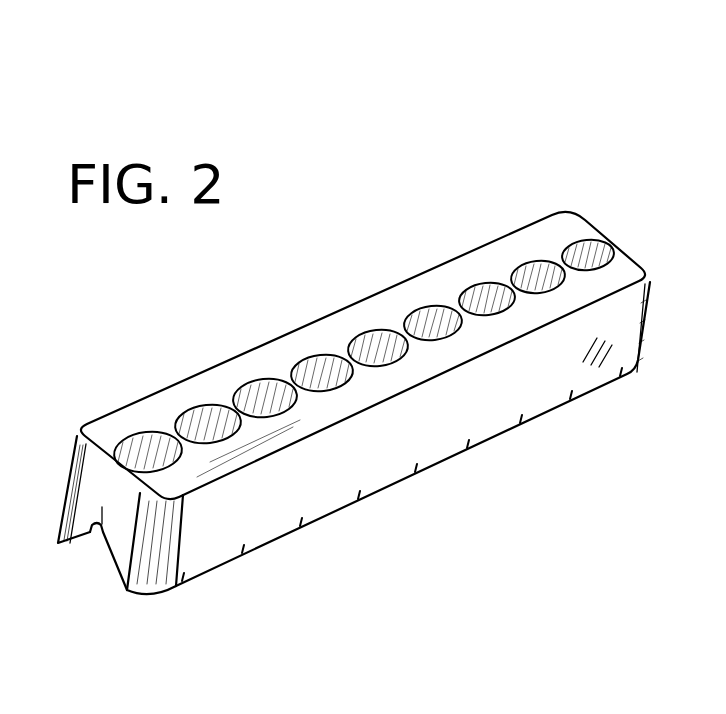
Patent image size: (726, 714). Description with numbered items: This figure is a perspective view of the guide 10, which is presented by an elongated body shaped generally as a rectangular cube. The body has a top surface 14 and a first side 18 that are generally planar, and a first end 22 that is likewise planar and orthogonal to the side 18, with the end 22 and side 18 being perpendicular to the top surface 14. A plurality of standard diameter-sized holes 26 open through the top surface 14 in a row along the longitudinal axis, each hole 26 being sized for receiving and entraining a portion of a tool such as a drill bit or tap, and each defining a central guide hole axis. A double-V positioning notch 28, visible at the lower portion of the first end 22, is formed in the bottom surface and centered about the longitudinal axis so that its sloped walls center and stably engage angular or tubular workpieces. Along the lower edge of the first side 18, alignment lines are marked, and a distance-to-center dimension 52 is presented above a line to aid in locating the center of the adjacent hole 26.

The guide 10 is at (350, 367).
The top surface 14 is at (278, 357).
The first side 18 is at (451, 435).
The first end 22 is at (90, 479).
The holes 26 is at (418, 308).
The double-V positioning notch 28 is at (93, 562).
The distance-to-center dimension 52 is at (211, 558).